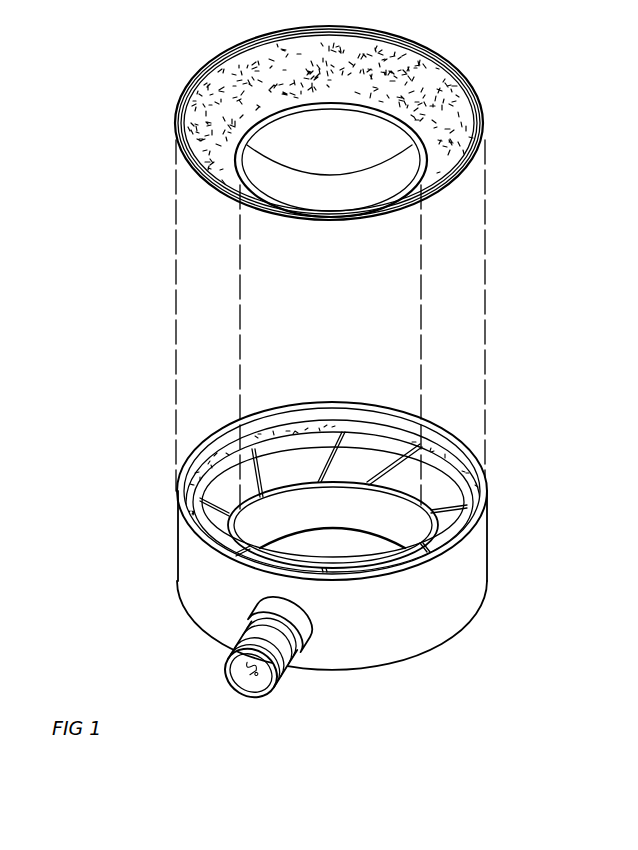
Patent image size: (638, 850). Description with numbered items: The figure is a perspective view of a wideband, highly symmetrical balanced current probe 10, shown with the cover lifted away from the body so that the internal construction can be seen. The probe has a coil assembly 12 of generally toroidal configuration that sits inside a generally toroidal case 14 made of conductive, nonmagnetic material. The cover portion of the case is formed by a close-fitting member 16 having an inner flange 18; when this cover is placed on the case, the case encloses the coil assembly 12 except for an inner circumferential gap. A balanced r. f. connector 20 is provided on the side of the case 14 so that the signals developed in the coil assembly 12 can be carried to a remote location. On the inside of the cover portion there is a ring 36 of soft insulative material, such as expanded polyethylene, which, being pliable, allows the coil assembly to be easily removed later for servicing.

The balanced current probe 10 is at (345, 367).
The coil assembly 12 is at (292, 458).
The case 14 is at (180, 553).
The close-fitting member 16 is at (468, 80).
The inner flange 18 is at (340, 202).
The balanced r. f. connector 20 is at (302, 628).
The ring 36 is at (210, 90).